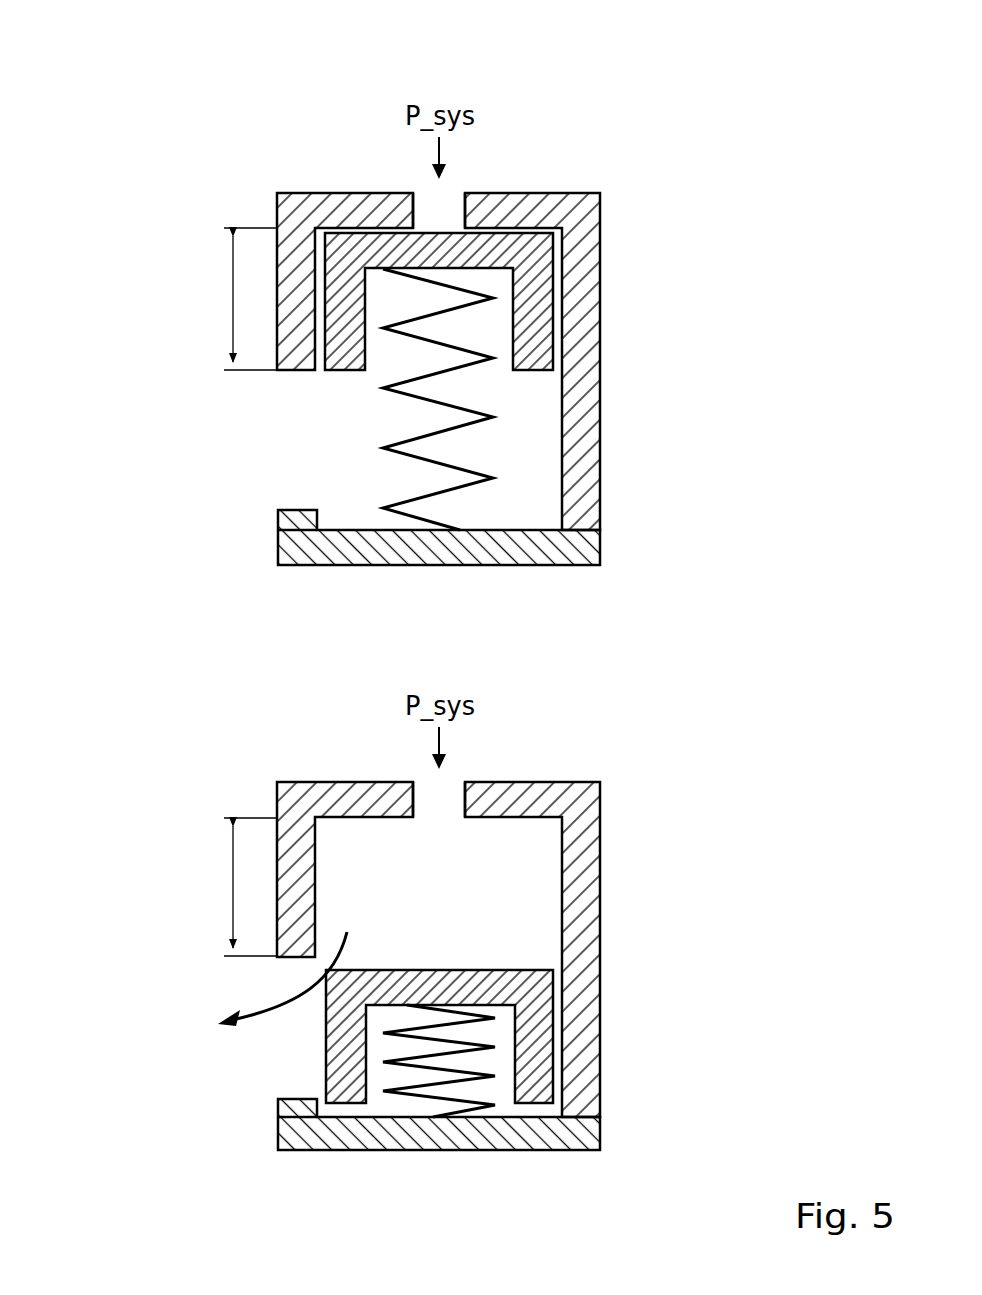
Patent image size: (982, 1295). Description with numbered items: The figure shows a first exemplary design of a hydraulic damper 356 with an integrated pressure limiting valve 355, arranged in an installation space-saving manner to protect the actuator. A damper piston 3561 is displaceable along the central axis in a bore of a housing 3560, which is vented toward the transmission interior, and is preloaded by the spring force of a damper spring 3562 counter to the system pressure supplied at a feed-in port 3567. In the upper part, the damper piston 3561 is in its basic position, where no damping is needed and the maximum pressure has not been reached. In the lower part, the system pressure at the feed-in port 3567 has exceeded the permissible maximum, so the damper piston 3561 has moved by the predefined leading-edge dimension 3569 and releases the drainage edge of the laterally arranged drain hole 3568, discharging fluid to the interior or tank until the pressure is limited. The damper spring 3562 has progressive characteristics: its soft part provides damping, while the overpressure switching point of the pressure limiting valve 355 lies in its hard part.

The pressure limiting valve 355 is at (102, 235).
The hydraulic damper 356 is at (728, 624).
The housing 3560 is at (580, 285).
The damper piston 3561 is at (528, 340).
The damper spring 3562 is at (395, 397).
The feed-in port 3567 is at (452, 207).
The drain hole 3568 is at (300, 478).
The leading-edge dimension 3569 is at (233, 303).